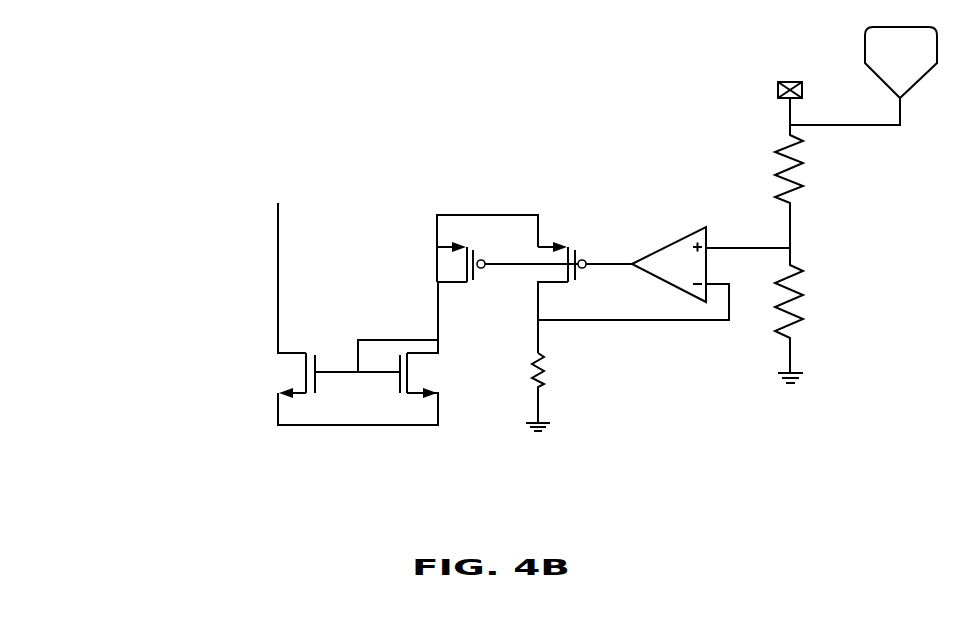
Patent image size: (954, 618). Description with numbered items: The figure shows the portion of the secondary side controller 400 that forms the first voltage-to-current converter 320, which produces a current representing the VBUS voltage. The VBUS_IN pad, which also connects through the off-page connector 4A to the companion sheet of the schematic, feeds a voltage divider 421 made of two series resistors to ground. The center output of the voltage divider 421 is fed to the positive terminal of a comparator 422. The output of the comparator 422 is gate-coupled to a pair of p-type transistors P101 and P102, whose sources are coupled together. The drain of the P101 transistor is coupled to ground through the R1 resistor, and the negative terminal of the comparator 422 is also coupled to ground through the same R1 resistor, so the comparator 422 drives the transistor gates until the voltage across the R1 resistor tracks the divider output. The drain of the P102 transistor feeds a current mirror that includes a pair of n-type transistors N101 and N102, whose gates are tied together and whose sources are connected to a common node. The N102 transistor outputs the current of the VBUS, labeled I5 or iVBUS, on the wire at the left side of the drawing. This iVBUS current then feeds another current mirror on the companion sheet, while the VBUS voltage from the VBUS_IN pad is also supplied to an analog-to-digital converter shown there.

The secondary side controller 400 is at (452, 79).
The first voltage-to-current converter 320 is at (193, 267).
The voltage divider 421 is at (829, 220).
The comparator 422 is at (658, 250).
The connector to FIG. 4A is at (901, 62).
The p-type transistor P101 is at (585, 284).
The p-type transistor P102 is at (478, 248).
The n-type transistor N101 is at (429, 337).
The n-type transistor N102 is at (332, 389).
The resistor R1 is at (551, 392).